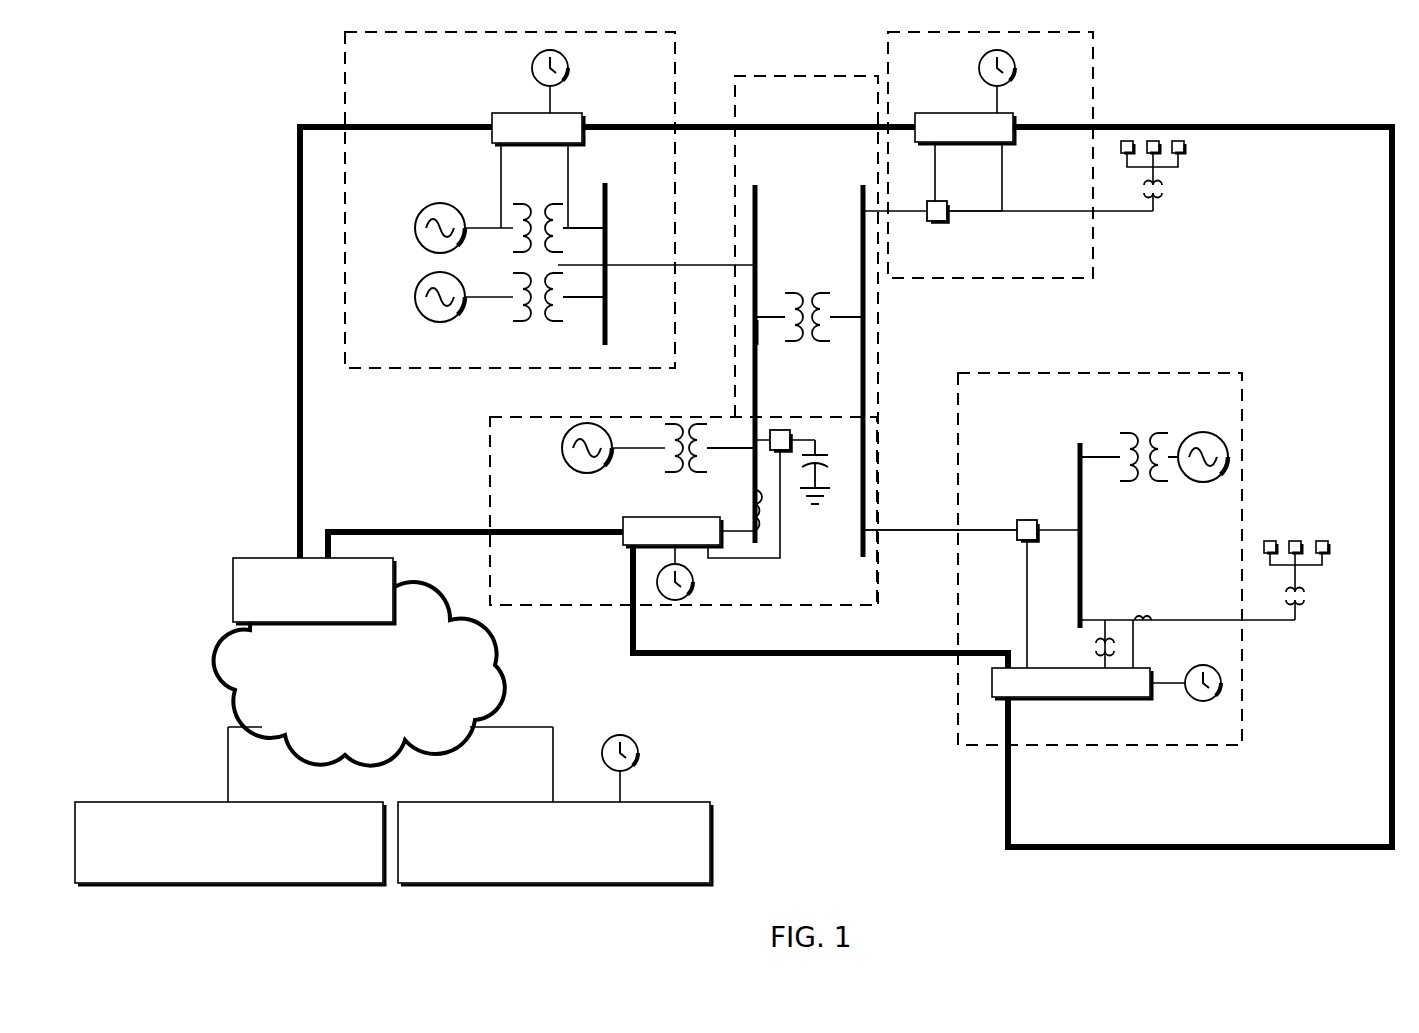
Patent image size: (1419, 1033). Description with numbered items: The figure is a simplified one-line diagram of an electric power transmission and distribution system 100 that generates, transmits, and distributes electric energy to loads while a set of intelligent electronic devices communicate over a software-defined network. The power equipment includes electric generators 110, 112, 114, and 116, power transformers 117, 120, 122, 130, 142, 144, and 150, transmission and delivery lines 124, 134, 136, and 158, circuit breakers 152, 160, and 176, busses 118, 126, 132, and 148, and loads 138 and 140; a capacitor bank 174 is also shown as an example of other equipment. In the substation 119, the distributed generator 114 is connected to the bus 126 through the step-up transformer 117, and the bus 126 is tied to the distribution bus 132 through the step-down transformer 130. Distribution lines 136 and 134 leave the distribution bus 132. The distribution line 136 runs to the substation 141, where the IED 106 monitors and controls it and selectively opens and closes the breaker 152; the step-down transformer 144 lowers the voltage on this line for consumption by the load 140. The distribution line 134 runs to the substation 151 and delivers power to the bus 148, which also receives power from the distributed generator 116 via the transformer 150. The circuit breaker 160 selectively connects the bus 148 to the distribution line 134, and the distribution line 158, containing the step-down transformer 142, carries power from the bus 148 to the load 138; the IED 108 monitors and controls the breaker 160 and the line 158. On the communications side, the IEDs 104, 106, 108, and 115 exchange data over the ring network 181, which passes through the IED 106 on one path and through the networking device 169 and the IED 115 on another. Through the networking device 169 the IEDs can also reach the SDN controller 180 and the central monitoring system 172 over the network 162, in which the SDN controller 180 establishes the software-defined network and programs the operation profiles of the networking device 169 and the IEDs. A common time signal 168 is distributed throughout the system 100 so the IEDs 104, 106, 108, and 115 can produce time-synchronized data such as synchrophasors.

The electric power transmission and distribution system 100 is at (172, 84).
The IED 104 is at (517, 112).
The IED 106 is at (947, 112).
The IED 108 is at (1127, 697).
The generator 110 is at (415, 228).
The generator 112 is at (415, 297).
The generator 114 is at (562, 448).
The IED 115 is at (708, 517).
The distributed generator 116 is at (1198, 479).
The step-up transformer 117 is at (665, 471).
The bus 118 is at (608, 323).
The substation 119 is at (548, 606).
The transformer 120 is at (511, 242).
The transformer 122 is at (540, 322).
The line 124 is at (699, 265).
The bus 126 is at (760, 335).
The step-down transformer 130 is at (817, 293).
The distribution bus 132 is at (863, 516).
The distribution line 134 is at (976, 532).
The distribution line 136 is at (921, 222).
The load 138 is at (1299, 541).
The load 140 is at (1190, 148).
The substation 141 is at (1073, 278).
The step-down transformer 142 is at (1312, 598).
The step-down transformer 144 is at (1167, 189).
The bus 148 is at (1076, 445).
The transformer 150 is at (1146, 434).
The substation 151 is at (1177, 745).
The breaker 152 is at (948, 225).
The distribution line 158 is at (1177, 616).
The circuit breaker 160 is at (1025, 519).
The network 162 is at (383, 686).
The common time signal 168 is at (569, 70).
The networking device 169 is at (264, 557).
The central monitoring system 172 is at (230, 843).
The capacitor bank 174 is at (825, 455).
The breaker 176 is at (781, 429).
The SDN controller 180 is at (555, 843).
The ring network 181 is at (296, 288).